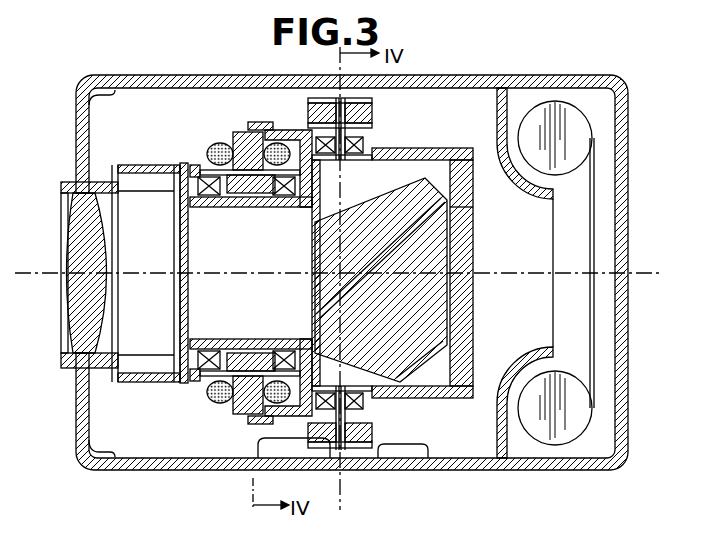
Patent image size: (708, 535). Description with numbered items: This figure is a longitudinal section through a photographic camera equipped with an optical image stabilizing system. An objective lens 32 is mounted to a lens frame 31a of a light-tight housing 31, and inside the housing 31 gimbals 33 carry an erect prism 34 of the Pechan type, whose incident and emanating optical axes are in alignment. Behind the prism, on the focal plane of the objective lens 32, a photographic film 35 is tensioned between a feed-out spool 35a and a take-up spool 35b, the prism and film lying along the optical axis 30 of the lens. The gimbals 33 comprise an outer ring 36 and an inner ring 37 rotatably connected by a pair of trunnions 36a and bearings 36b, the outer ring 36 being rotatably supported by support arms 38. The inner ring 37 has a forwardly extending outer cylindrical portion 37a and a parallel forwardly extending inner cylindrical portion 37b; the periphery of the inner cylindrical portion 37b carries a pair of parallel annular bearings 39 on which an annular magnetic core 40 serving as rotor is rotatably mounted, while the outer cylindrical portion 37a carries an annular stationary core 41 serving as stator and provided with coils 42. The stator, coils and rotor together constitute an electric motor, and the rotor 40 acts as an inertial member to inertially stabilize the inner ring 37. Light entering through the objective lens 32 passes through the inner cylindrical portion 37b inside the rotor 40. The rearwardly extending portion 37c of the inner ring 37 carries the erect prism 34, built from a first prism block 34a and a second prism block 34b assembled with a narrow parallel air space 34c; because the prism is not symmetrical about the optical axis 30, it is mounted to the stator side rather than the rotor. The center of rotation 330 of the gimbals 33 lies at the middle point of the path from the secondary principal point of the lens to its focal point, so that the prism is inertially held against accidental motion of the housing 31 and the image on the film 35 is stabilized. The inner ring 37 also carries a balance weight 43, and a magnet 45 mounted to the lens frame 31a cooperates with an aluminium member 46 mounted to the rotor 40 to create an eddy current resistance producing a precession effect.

The optical axis 30 is at (146, 275).
The light-tight housing 31 is at (474, 78).
The lens frame 31a is at (82, 131).
The objective lens 32 is at (82, 323).
The gimbals 33 is at (414, 128).
The erect prism 34 is at (425, 365).
The first prism block 34a is at (432, 180).
The second prism block 34b is at (448, 223).
The parallel air space 34c is at (380, 262).
The photographic film 35 is at (596, 228).
The feed-out spool 35a is at (586, 136).
The take-up spool 35b is at (584, 408).
The outer ring 36 is at (373, 105).
The trunnions 36a is at (337, 113).
The bearings 36b is at (311, 130).
The inner ring 37 is at (430, 145).
The outer cylindrical portion 37a is at (262, 117).
The inner cylindrical portion 37b is at (242, 207).
The rearwardly extending portion 37c is at (443, 392).
The support arms 38 is at (403, 445).
The annular bearings 39 is at (211, 206).
The annular magnetic core 40 is at (222, 404).
The annular stationary core 41 is at (240, 128).
The coils 42 is at (220, 150).
The balance weight 43 is at (474, 368).
The magnet 45 is at (186, 175).
The aluminium member 46 is at (193, 382).
The center of rotation 330 is at (343, 270).